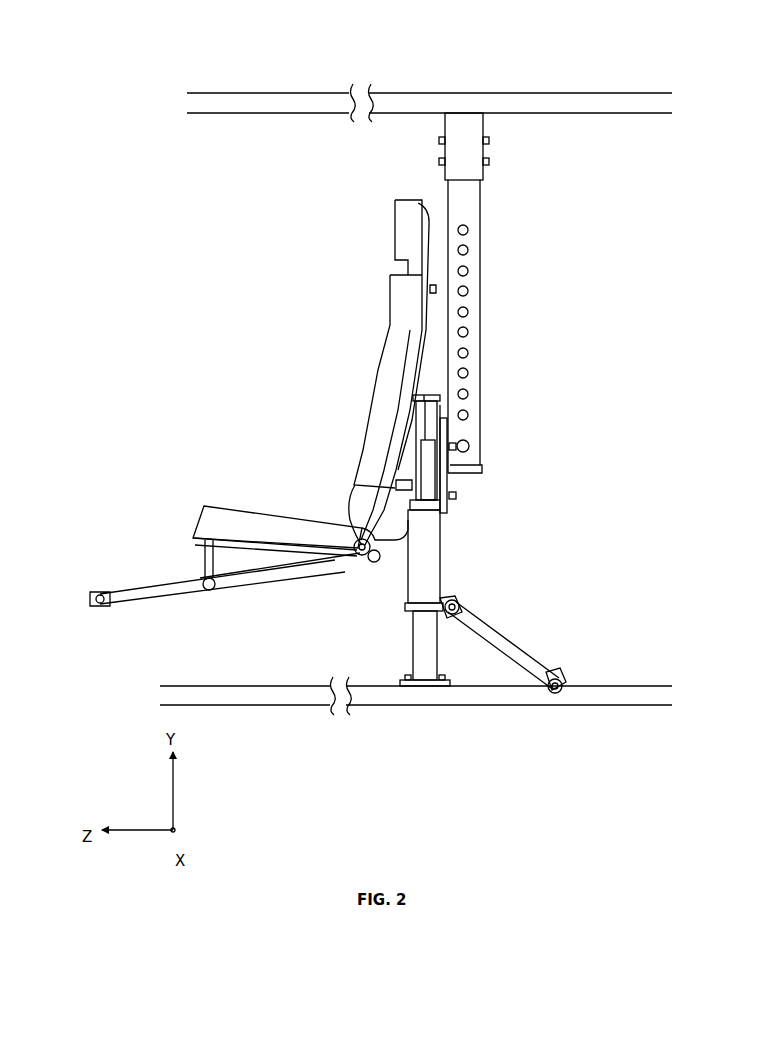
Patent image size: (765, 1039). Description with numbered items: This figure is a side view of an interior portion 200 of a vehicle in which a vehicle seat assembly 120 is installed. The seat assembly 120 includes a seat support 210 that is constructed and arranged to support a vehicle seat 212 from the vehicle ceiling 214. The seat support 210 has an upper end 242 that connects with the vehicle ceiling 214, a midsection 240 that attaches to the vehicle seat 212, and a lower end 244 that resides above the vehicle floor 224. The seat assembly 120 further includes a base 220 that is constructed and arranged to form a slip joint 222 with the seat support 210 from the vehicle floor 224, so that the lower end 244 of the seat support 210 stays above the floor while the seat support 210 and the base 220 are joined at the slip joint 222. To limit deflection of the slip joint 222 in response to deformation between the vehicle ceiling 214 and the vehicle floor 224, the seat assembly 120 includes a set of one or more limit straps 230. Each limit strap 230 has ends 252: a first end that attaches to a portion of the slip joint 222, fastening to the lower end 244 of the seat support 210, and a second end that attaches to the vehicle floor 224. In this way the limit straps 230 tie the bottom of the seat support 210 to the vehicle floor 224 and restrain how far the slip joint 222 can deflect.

The interior portion 200 is at (128, 36).
The vehicle seat assembly 120 is at (308, 183).
The vehicle seat 212 is at (315, 300).
The vehicle ceiling 214 is at (560, 118).
The upper end 242 is at (484, 150).
The seat support 210 is at (550, 113).
The midsection 240 is at (479, 450).
The lower end 244 is at (443, 560).
The slip joint 222 is at (405, 605).
The base 220 is at (379, 595).
The vehicle floor 224 is at (477, 686).
The limit strap 230 is at (525, 636).
The ends of limit strap 252 is at (612, 598).